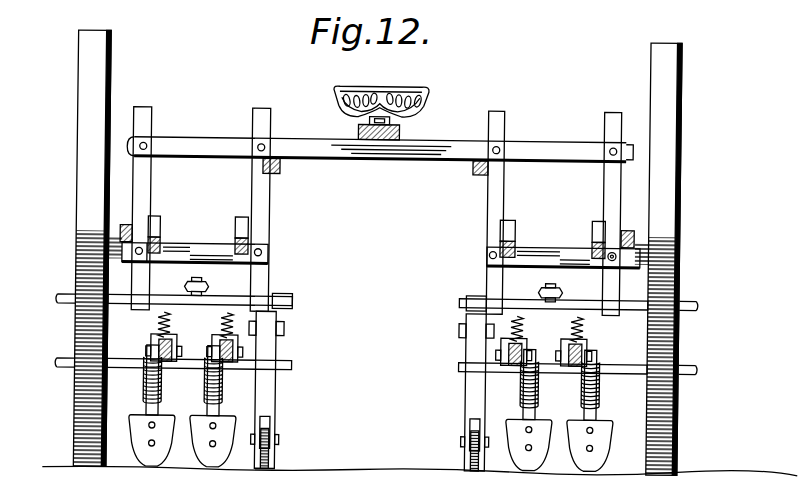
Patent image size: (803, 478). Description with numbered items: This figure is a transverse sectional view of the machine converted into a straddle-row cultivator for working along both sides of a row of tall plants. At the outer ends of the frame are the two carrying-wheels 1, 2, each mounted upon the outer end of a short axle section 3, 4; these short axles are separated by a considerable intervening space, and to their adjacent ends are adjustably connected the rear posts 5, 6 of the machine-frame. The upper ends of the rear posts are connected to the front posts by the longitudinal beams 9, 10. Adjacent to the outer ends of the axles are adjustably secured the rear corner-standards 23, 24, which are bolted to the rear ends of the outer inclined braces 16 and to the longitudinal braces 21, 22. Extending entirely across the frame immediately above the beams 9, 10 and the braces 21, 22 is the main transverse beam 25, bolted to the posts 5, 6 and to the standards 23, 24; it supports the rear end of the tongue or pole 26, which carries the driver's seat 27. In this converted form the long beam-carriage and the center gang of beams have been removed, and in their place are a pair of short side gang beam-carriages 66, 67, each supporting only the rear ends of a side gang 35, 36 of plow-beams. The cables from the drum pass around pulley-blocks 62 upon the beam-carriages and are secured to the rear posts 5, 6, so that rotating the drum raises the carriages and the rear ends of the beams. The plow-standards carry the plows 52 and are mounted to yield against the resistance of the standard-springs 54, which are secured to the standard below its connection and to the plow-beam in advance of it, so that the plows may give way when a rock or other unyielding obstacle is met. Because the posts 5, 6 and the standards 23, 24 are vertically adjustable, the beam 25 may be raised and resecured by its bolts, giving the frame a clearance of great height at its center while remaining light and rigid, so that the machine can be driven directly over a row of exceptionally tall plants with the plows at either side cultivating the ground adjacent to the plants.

The carrying-wheel 1 is at (76, 96).
The carrying-wheel 2 is at (681, 106).
The axle section 3 is at (195, 266).
The axle section 4 is at (580, 256).
The rear post 5 is at (269, 206).
The rear post 6 is at (489, 200).
The longitudinal beam 9 is at (279, 173).
The longitudinal beam 10 is at (479, 172).
The inclined brace 16 is at (236, 240).
The longitudinal brace 21 is at (125, 229).
The longitudinal brace 22 is at (627, 225).
The rear corner-standard 23 is at (144, 179).
The rear corner-standard 24 is at (606, 195).
The main transverse beam 25 is at (209, 130).
The tongue 26 is at (379, 141).
The driver's seat 27 is at (352, 94).
The side gang 35 is at (159, 350).
The side gang 36 is at (509, 354).
The plow 52 is at (206, 462).
The standard-spring 54 is at (165, 394).
The pulley-block 62 is at (201, 289).
The side gang beam-carriage 66 is at (195, 324).
The side gang beam-carriage 67 is at (547, 326).